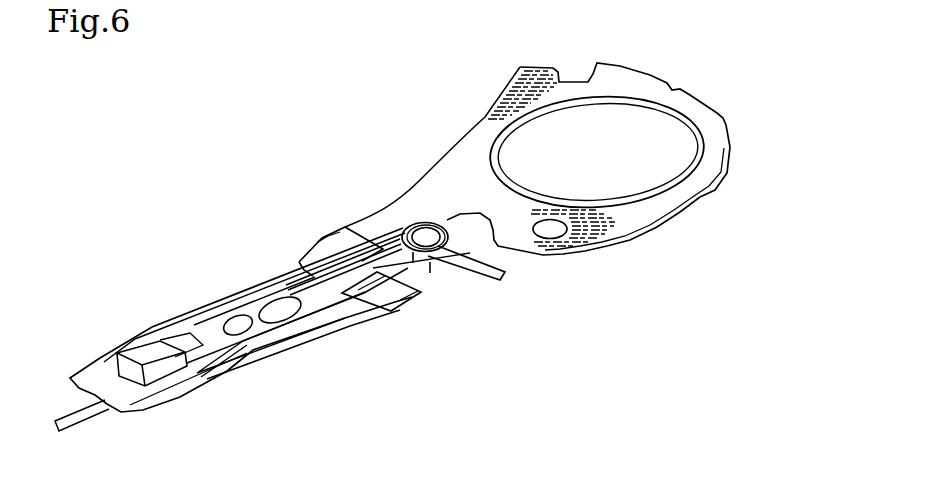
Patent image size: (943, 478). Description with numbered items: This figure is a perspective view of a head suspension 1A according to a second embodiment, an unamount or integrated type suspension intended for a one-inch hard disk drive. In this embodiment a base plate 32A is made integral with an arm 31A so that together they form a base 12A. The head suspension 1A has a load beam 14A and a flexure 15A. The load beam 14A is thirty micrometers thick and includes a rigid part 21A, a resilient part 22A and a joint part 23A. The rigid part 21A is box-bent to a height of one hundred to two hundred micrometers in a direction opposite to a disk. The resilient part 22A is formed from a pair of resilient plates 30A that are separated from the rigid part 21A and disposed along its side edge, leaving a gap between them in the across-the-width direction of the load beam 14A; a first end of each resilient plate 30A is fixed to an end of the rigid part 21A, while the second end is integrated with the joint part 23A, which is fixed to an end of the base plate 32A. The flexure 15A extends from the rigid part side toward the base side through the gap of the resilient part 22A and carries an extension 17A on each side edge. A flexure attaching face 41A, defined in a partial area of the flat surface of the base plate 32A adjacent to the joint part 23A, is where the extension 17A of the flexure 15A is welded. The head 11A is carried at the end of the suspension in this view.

The head suspension 1A is at (360, 108).
The head (slider) 11A is at (137, 340).
The base 12A is at (557, 256).
The load beam 14A is at (265, 251).
The flexure 15A is at (452, 268).
The extension 17A is at (376, 246).
The rigid part 21A is at (305, 323).
The resilient part 22A is at (310, 253).
The joint part 23A is at (414, 296).
The resilient plate 30A is at (323, 258).
The arm 31A is at (467, 143).
The base plate 32A is at (392, 296).
The flexure attaching face 41A is at (378, 245).